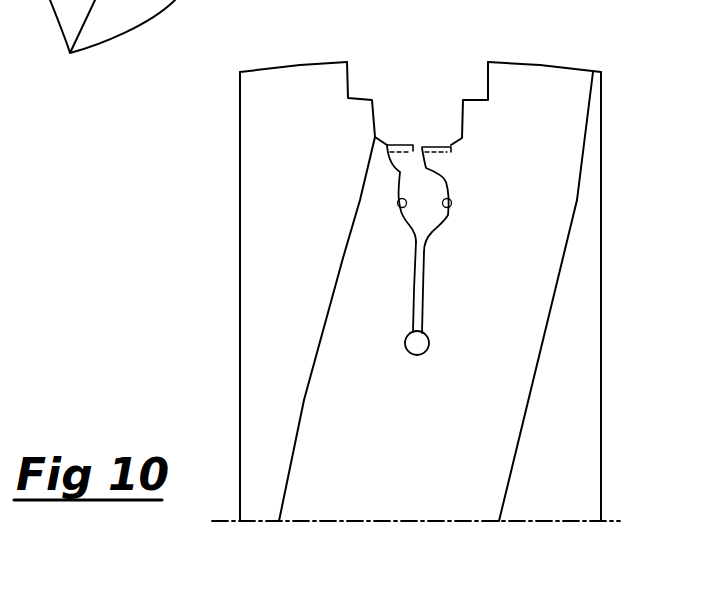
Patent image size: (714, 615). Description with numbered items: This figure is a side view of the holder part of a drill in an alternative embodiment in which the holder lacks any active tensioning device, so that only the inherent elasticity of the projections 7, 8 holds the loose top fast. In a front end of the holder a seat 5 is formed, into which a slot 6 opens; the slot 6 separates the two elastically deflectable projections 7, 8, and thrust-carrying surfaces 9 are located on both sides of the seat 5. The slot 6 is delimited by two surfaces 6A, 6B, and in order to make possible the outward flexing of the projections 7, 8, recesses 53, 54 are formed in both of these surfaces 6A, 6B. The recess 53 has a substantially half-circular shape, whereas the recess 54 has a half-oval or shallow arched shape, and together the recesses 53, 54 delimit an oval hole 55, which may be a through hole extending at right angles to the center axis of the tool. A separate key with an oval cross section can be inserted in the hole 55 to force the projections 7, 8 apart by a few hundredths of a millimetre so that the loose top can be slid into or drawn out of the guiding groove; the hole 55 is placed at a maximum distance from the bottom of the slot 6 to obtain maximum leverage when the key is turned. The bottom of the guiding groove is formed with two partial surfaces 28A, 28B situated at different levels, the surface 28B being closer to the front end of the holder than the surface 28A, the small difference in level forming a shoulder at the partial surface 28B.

The seat 5 is at (452, 118).
The slot 6 is at (437, 317).
The surface delimiting the slot 6A is at (413, 273).
The surface delimiting the slot 6B is at (418, 293).
The elastically deflectable projection 7 is at (588, 227).
The elastically deflectable projection 8 is at (250, 188).
The thrust-carrying surface 9 is at (303, 62).
The partial surface 28A is at (434, 147).
The partial surface 28B is at (404, 143).
The recess 53 is at (452, 204).
The recess 54 is at (400, 210).
The oval hole 55 is at (417, 193).